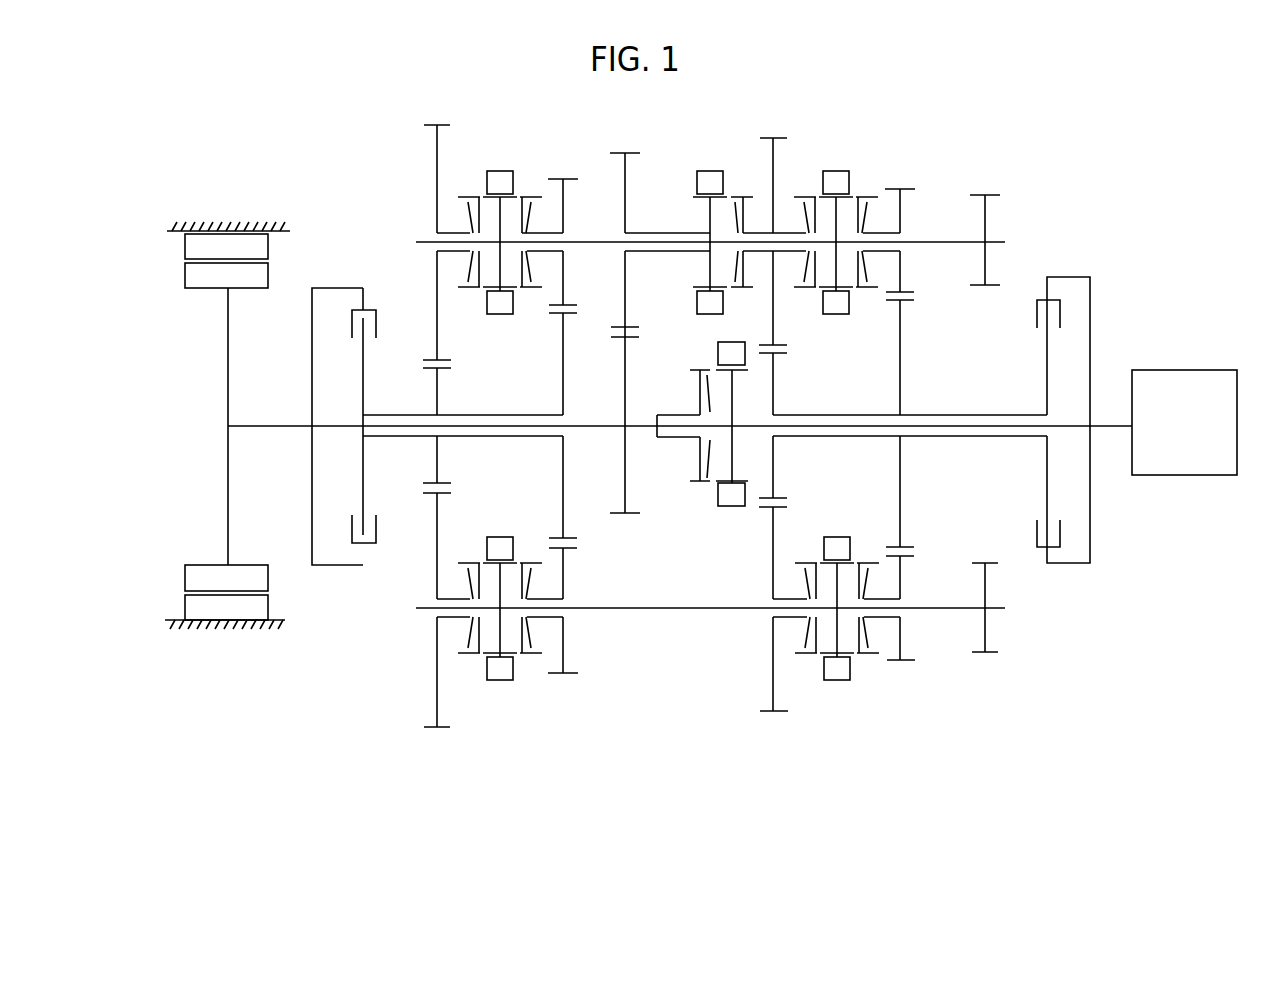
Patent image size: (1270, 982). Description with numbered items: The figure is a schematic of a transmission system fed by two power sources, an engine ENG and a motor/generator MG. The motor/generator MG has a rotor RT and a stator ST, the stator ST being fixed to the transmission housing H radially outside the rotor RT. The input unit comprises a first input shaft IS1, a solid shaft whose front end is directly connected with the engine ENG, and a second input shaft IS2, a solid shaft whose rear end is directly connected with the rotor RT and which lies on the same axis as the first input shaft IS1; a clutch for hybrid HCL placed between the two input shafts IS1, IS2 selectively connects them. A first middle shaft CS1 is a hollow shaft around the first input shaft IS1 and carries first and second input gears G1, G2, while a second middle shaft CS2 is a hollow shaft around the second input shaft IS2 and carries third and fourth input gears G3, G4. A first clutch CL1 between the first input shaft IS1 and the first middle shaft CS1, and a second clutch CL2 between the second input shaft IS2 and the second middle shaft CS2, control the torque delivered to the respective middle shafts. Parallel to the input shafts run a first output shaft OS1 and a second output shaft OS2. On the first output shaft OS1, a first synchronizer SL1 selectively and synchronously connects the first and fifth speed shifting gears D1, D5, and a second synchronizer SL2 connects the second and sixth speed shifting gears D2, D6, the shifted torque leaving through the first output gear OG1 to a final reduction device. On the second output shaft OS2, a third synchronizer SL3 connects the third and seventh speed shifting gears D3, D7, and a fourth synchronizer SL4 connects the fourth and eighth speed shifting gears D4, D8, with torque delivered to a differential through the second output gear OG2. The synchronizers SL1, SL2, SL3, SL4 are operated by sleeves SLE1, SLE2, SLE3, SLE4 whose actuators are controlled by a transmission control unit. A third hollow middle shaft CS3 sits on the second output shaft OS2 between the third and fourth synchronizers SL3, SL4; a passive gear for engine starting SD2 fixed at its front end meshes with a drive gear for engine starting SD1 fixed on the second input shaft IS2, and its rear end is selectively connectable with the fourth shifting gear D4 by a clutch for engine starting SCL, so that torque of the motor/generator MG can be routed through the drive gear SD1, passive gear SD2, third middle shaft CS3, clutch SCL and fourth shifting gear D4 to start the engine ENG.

The transmission housing H is at (250, 229).
The stator ST is at (226, 247).
The rotor RT is at (226, 276).
The motor/generator MG is at (253, 261).
The second clutch CL2 is at (376, 297).
The first clutch CL1 is at (1069, 304).
The second input shaft IS2 is at (268, 429).
The first input shaft IS1 is at (961, 430).
The second middle shaft CS2 is at (497, 438).
The first middle shaft CS1 is at (843, 439).
The third middle shaft CS3 is at (665, 231).
The second output shaft OS2 is at (959, 238).
The first output shaft OS1 is at (940, 605).
The second output gear OG2 is at (986, 263).
The first output gear OG1 is at (986, 628).
The engine ENG is at (1184, 422).
The first speed shifting gear D1 is at (437, 689).
The second speed shifting gear D2 is at (773, 660).
The third speed shifting gear D3 is at (437, 152).
The fourth speed shifting gear D4 is at (773, 157).
The fifth speed shifting gear D5 is at (564, 645).
The sixth speed shifting gear D6 is at (901, 637).
The seventh speed shifting gear D7 is at (563, 205).
The eighth speed shifting gear D8 is at (901, 207).
The first input gear G1 is at (901, 351).
The second input gear G2 is at (774, 379).
The third input gear G3 is at (438, 383).
The fourth input gear G4 is at (564, 378).
The drive gear for engine starting SD1 is at (626, 490).
The passive gear for engine starting SD2 is at (626, 175).
The clutch for engine starting SCL is at (704, 159).
The clutch for hybrid HCL is at (704, 502).
The first synchronizer SL1 is at (512, 646).
The second synchronizer SL2 is at (850, 642).
The third synchronizer SL3 is at (513, 213).
The fourth synchronizer SL4 is at (847, 210).
The sleeve SLE1 is at (501, 683).
The sleeve SLE2 is at (838, 682).
The sleeve SLE3 is at (500, 168).
The sleeve SLE4 is at (833, 165).